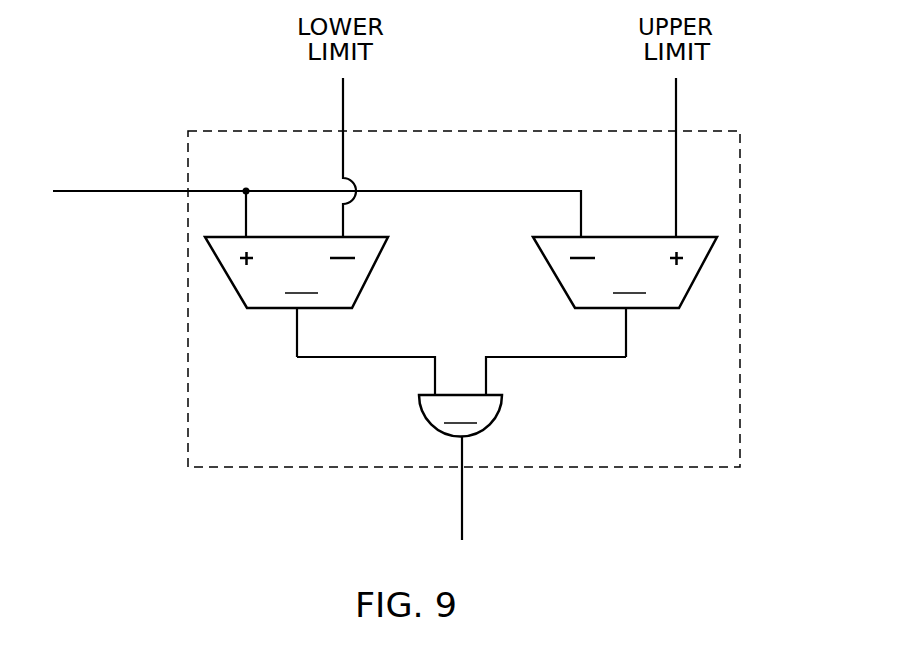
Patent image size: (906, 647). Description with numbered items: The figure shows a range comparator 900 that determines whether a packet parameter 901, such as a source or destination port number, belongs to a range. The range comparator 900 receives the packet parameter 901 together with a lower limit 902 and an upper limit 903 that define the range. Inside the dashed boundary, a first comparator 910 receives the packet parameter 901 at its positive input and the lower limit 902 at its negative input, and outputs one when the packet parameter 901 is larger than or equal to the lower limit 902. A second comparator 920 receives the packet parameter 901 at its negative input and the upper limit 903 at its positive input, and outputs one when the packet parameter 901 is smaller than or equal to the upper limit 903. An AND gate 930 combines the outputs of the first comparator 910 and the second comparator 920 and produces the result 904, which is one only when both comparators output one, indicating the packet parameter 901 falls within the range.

The range comparator 900 is at (741, 150).
The packet parameter 901 is at (80, 193).
The lower limit 902 is at (344, 92).
The upper limit 903 is at (677, 92).
The result 904 is at (463, 502).
The first comparator 910 is at (296, 297).
The second comparator 920 is at (625, 297).
The AND gate 930 is at (461, 397).